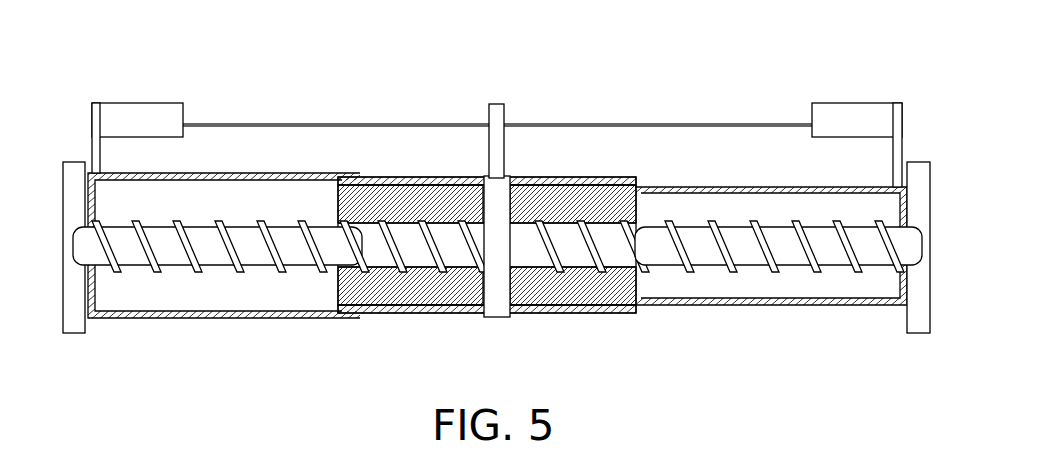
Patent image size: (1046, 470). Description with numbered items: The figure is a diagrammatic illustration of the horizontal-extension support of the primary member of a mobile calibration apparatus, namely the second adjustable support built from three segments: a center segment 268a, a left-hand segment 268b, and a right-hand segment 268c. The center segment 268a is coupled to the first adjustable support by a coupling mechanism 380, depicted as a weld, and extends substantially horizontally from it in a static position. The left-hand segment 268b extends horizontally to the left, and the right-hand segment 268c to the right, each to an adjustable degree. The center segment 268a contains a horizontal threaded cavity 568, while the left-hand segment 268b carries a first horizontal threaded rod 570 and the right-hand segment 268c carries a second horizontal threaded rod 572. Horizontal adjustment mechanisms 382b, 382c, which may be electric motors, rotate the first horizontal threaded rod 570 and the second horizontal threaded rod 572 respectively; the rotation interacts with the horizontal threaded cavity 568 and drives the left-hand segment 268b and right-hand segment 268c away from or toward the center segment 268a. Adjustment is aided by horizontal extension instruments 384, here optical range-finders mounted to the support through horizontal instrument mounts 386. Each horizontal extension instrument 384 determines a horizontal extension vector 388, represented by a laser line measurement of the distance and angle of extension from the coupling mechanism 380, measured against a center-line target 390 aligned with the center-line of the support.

The center segment 268a is at (415, 315).
The left-hand segment 268b is at (195, 320).
The right-hand segment 268c is at (767, 306).
The coupling mechanism 380 is at (496, 318).
The horizontal adjustment mechanism 382b is at (73, 335).
The horizontal adjustment mechanism 382c is at (917, 335).
The horizontal extension instrument 384 is at (139, 103).
The horizontal instrument mount 386 is at (90, 120).
The horizontal extension vector 388 is at (278, 122).
The center-line target 390 is at (497, 102).
The horizontal threaded cavity 568 is at (441, 260).
The first horizontal threaded rod 570 is at (238, 261).
The second horizontal threaded rod 572 is at (788, 260).